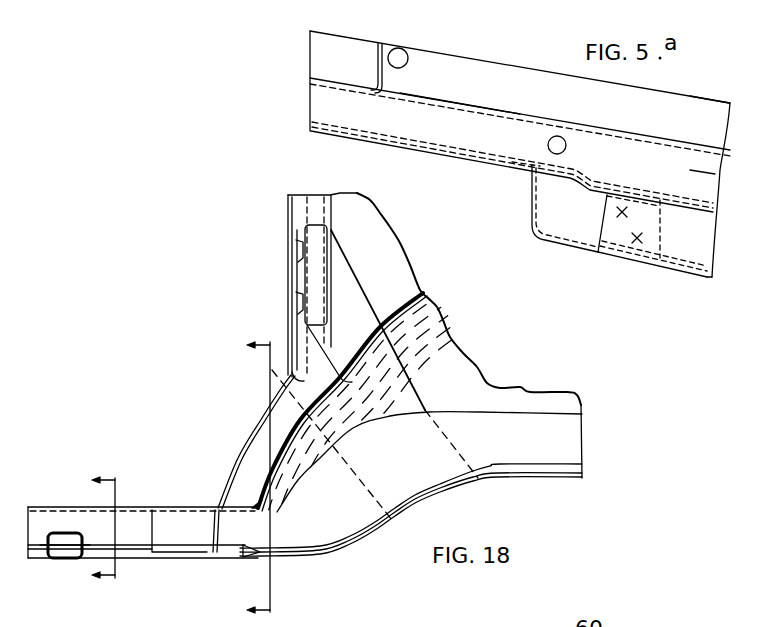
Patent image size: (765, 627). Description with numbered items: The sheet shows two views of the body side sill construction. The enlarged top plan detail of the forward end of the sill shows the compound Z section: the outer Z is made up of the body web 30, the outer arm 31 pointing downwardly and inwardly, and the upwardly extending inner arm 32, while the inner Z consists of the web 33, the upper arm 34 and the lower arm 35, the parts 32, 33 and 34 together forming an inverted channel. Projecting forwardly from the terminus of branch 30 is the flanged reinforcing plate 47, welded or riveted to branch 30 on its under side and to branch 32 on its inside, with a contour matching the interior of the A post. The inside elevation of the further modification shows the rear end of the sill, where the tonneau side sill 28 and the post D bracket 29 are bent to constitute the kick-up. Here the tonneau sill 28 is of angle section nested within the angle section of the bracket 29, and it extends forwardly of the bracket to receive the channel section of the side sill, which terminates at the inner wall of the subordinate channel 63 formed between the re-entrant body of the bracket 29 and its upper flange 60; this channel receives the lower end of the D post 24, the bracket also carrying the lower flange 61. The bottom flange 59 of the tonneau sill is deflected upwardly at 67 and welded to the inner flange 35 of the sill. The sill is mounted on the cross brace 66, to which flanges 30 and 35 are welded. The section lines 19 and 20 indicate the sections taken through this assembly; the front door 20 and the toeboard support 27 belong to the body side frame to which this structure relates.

In FIG. 18, the section line 19- 19 is at (246, 480).
In FIG. 18, the front door 20 is at (89, 532).
In FIG. 18, the D post 24 is at (312, 205).
In FIG. 18, the toeboard support 27 is at (467, 242).
In FIG. 18, the tonneau side sill 28 is at (423, 473).
In FIG. 18, the post D bracket 29 is at (403, 400).
In FIG. 5a, the body web 30 is at (707, 278).
In FIG. 5a, the outer arm 31 is at (676, 272).
In FIG. 5a, the inner arm 32 is at (688, 212).
In FIG. 5a, the web 33 is at (533, 113).
In FIG. 5a, the upper arm 34 is at (697, 190).
In FIG. 18, the upper arm 34 is at (52, 505).
In FIG. 5a, the lower arm 35 is at (710, 113).
In FIG. 18, the lower arm 35 is at (190, 545).
In FIG. 5a, the flanged reinforcing plate 47 is at (552, 204).
In FIG. 18, the lower flange 59 is at (345, 548).
In FIG. 18, the upper flange 60 is at (236, 470).
In FIG. 18, the lower flange 61 is at (303, 560).
In FIG. 18, the subordinate channel section 63 is at (259, 452).
In FIG. 18, the cross brace 66 is at (57, 562).
In FIG. 18, the upward deflection of bottom flange 67 is at (240, 563).